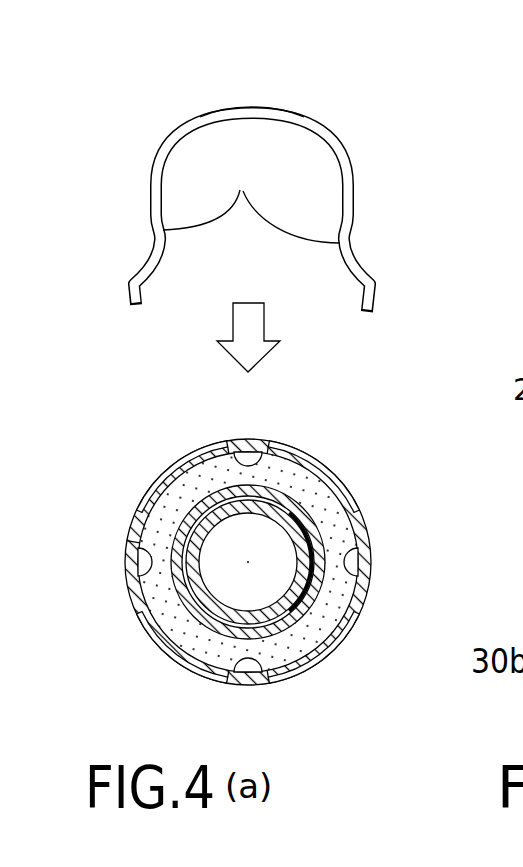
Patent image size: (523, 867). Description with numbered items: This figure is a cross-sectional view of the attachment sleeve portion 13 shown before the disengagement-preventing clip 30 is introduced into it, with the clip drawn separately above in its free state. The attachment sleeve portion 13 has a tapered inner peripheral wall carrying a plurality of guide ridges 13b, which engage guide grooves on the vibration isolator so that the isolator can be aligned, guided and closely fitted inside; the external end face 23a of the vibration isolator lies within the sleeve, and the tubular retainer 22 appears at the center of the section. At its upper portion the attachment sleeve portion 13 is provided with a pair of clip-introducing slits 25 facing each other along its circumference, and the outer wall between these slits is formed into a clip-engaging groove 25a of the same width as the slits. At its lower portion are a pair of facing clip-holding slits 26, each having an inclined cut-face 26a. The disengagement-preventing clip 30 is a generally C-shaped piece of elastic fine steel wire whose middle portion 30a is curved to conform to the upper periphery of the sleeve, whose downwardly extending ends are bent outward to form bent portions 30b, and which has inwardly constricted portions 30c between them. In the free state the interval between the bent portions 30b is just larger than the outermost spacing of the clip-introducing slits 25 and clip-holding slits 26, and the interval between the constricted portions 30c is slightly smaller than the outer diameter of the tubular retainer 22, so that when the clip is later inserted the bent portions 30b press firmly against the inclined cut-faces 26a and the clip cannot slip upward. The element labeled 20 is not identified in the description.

The attachment sleeve portion 13 is at (372, 555).
The guide ridges 13b is at (245, 457).
The inner ring 20 is at (303, 580).
The tubular retainer 22 is at (277, 627).
The external end face 23a is at (128, 540).
The clip-introducing slits 25 is at (160, 482).
The clip-engaging groove 25a is at (303, 451).
The clip-holding slits 26 is at (340, 647).
The inclined cut-faces 26a is at (352, 616).
The disengagement-preventing clip 30 is at (357, 178).
The middle portion 30a is at (275, 106).
The bent portions 30b is at (130, 272).
The inwardly constricted portions 30c is at (243, 183).